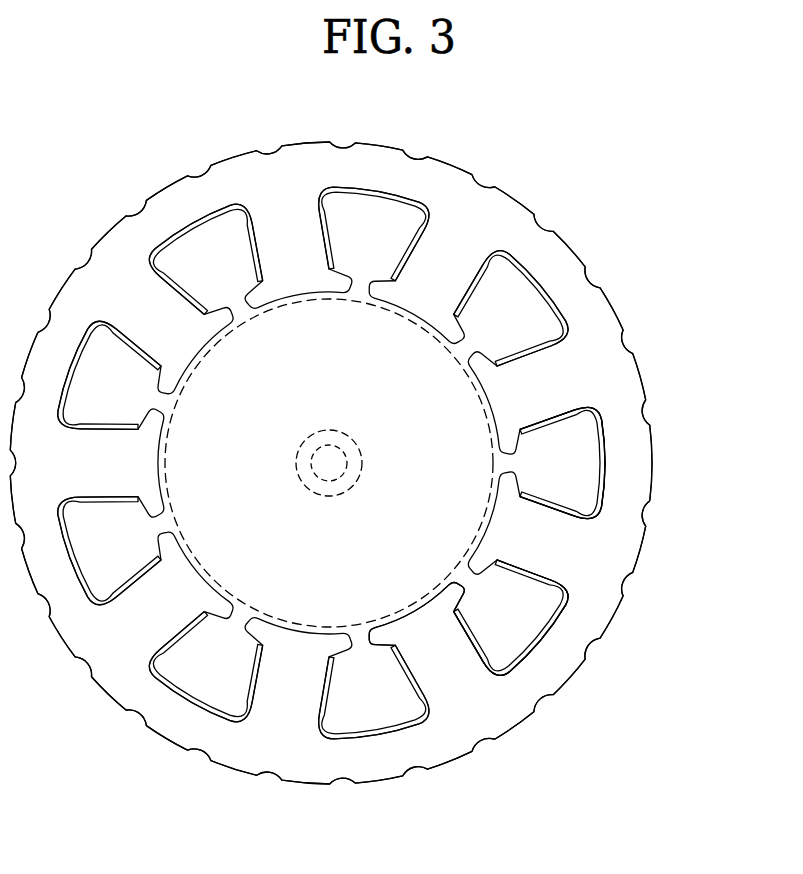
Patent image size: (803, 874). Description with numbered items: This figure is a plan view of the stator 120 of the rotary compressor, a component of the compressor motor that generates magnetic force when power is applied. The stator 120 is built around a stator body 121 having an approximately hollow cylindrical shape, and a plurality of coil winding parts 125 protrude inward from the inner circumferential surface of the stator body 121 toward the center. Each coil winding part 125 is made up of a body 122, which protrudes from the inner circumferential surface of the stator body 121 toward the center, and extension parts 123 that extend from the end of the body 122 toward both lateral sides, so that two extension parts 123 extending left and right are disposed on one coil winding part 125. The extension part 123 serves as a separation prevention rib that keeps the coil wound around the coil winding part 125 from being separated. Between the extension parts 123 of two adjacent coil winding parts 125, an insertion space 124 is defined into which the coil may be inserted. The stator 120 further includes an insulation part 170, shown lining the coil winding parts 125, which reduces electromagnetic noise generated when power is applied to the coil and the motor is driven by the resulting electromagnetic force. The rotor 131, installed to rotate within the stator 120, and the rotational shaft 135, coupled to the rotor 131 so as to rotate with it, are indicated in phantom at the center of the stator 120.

The stator 120 is at (119, 141).
The stator body 121 is at (597, 590).
The body 122 is at (540, 535).
The extension part 123 is at (508, 483).
The insertion space 124 is at (357, 640).
The coil winding part 125 is at (715, 466).
The rotor 131 is at (245, 600).
The rotational shaft 135 is at (300, 486).
The insulation part 170 is at (585, 413).